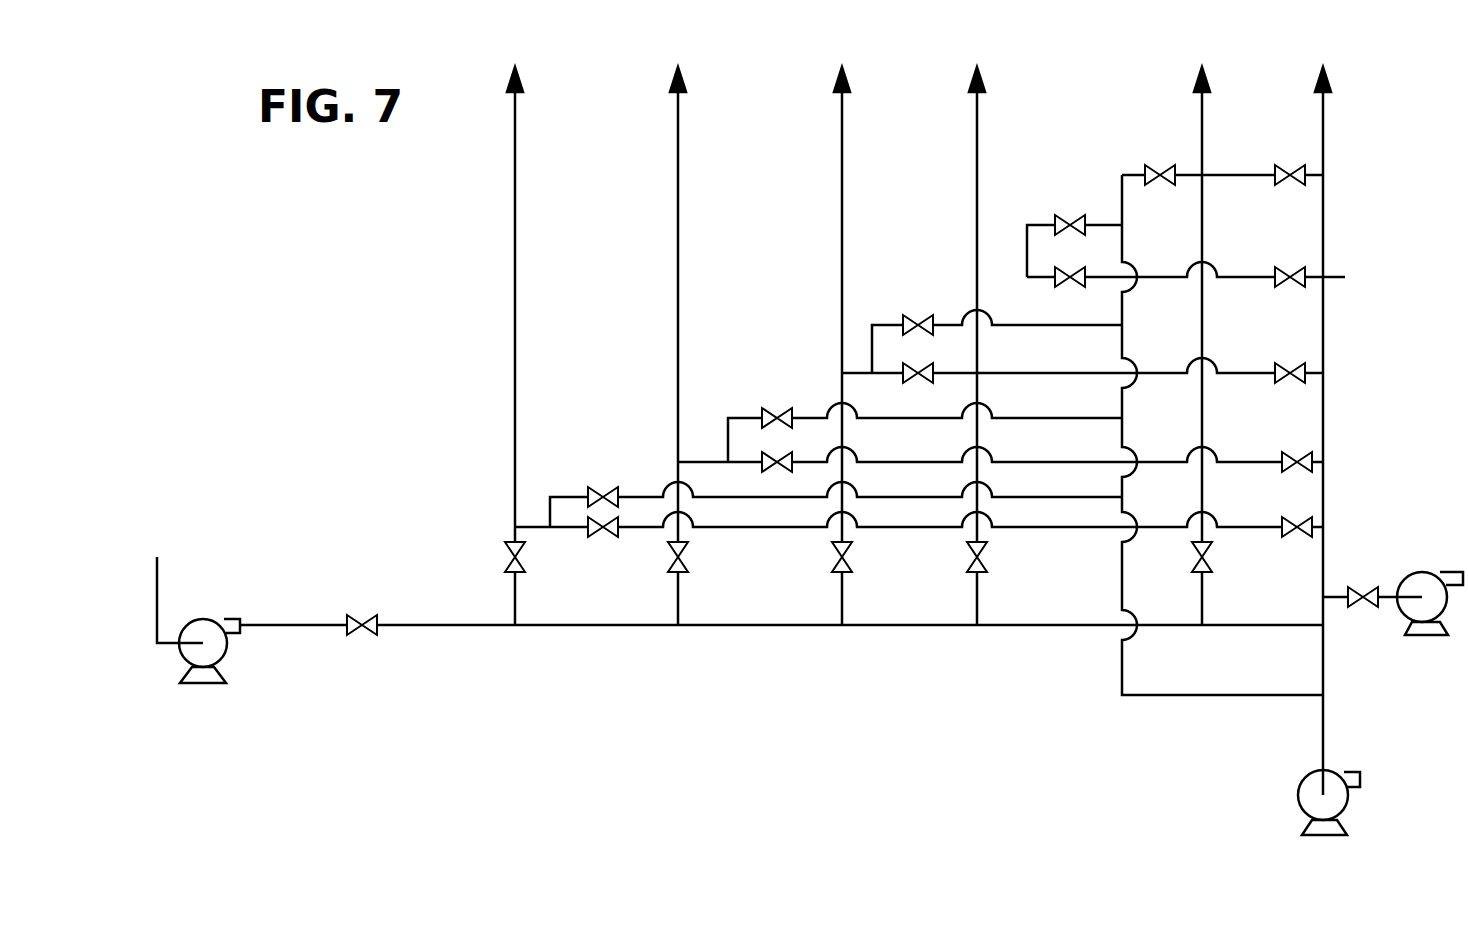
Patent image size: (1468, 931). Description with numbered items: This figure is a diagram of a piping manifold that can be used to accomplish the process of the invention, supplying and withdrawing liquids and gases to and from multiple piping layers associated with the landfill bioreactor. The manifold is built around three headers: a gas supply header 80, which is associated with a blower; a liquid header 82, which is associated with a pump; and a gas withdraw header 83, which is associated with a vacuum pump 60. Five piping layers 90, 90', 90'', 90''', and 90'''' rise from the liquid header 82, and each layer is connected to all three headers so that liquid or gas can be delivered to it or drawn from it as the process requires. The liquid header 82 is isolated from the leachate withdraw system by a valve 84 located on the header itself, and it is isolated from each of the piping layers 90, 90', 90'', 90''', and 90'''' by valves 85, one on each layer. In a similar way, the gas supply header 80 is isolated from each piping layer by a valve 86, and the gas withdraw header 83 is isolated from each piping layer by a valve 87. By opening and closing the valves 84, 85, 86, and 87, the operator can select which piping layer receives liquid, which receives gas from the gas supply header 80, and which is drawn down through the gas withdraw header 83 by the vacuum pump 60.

The vacuum pump 60 is at (1400, 637).
The gas supply header 80 is at (1327, 541).
The liquid header 82 is at (940, 628).
The gas withdraw header 83 is at (1205, 697).
The valve 84 is at (360, 632).
The valves 85 is at (505, 557).
The valve 86 is at (605, 535).
The valve 87 is at (603, 490).
The piping layer 90 is at (513, 335).
The piping layer 90' is at (678, 335).
The piping layer 90'' is at (842, 335).
The piping layer 90''' is at (977, 335).
The piping layer 90'''' is at (1201, 335).